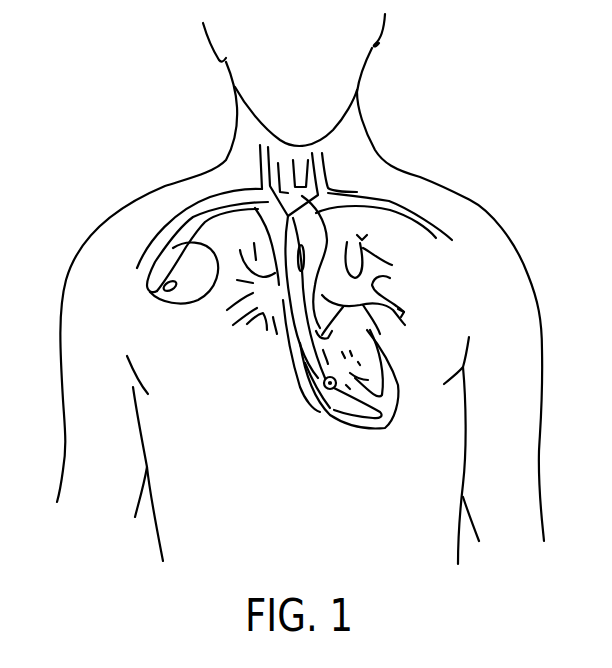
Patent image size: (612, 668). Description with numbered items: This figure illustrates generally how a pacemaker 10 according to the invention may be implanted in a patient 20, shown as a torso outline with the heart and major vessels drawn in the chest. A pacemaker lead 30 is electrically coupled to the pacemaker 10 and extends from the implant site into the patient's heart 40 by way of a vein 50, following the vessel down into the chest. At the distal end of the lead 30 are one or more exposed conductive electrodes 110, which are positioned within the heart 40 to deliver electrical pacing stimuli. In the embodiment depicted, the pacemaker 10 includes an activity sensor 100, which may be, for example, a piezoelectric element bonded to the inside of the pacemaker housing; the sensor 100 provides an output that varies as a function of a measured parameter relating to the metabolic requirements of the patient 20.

The pacemaker 10 is at (129, 303).
The patient 20 is at (470, 200).
The pacemaker lead 30 is at (197, 206).
The heart 40 is at (318, 410).
The vein 50 is at (147, 234).
The activity sensor 100 is at (147, 289).
The exposed conductive electrodes 110 is at (338, 409).